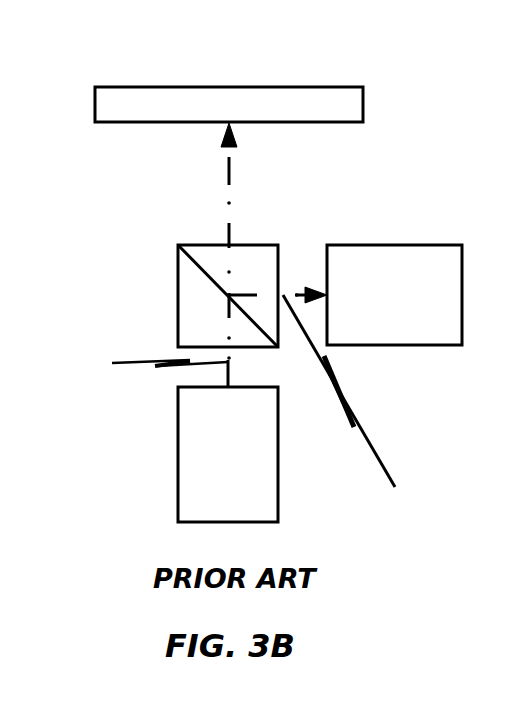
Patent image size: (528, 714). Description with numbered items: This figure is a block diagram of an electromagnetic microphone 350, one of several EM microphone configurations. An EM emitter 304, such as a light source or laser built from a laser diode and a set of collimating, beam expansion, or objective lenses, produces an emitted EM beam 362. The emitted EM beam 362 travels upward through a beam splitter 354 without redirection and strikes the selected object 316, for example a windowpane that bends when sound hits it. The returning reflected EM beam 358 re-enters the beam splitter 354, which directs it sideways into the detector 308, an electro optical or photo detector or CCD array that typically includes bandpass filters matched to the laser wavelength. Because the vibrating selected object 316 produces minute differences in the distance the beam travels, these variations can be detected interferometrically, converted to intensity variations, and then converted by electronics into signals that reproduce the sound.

The EM emitter 304 is at (280, 448).
The detector 308 is at (395, 245).
The selected object 316 is at (232, 83).
The EM microphone 350 is at (470, 180).
The beam splitter 354 is at (277, 247).
The reflected EM beam 358 is at (345, 403).
The emitted EM beam 362 is at (162, 374).